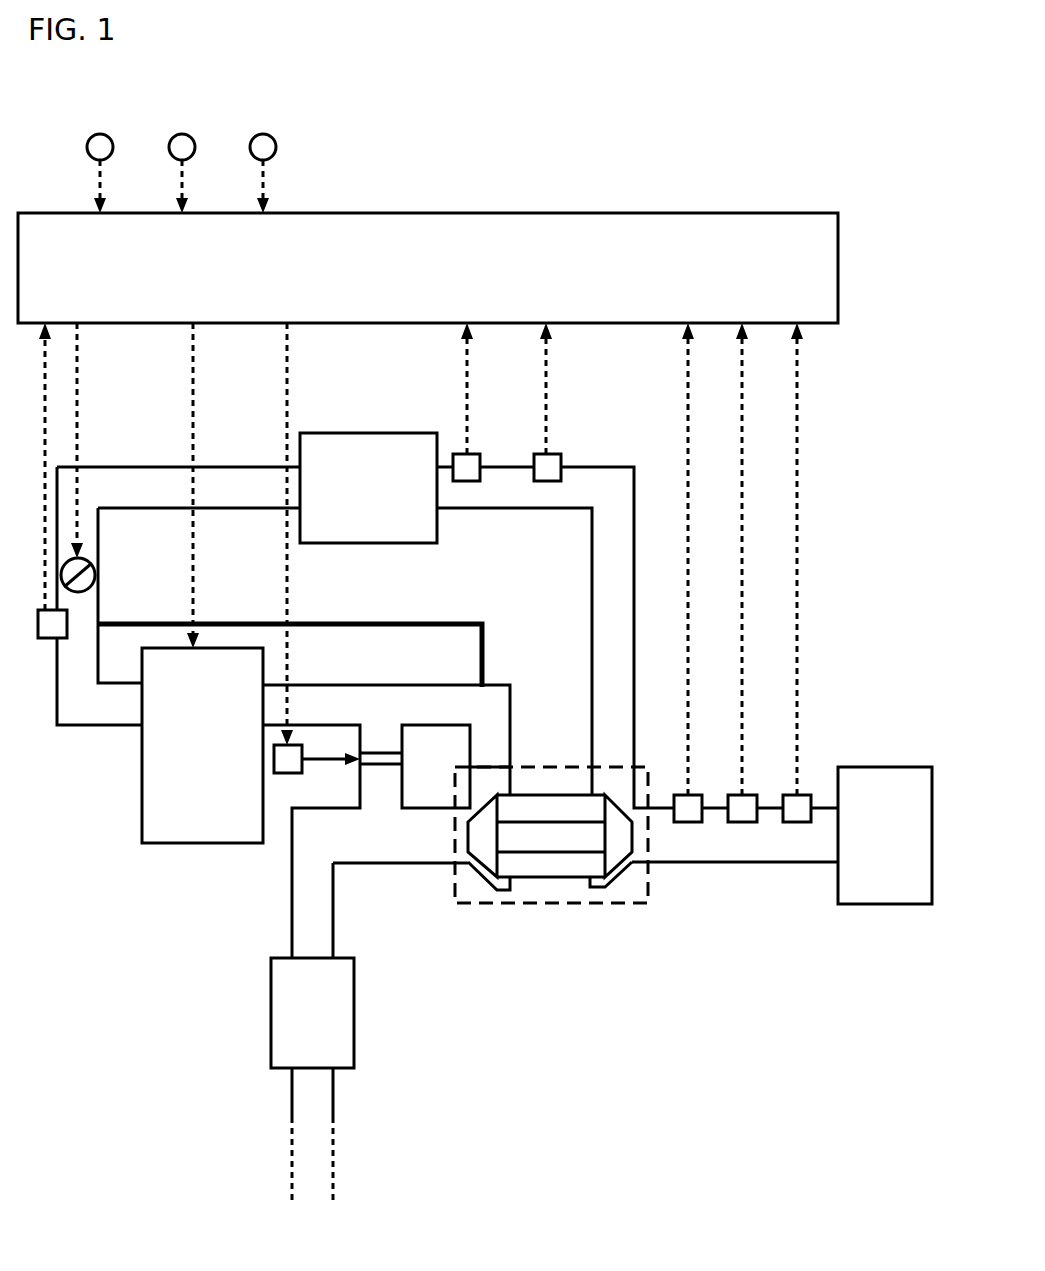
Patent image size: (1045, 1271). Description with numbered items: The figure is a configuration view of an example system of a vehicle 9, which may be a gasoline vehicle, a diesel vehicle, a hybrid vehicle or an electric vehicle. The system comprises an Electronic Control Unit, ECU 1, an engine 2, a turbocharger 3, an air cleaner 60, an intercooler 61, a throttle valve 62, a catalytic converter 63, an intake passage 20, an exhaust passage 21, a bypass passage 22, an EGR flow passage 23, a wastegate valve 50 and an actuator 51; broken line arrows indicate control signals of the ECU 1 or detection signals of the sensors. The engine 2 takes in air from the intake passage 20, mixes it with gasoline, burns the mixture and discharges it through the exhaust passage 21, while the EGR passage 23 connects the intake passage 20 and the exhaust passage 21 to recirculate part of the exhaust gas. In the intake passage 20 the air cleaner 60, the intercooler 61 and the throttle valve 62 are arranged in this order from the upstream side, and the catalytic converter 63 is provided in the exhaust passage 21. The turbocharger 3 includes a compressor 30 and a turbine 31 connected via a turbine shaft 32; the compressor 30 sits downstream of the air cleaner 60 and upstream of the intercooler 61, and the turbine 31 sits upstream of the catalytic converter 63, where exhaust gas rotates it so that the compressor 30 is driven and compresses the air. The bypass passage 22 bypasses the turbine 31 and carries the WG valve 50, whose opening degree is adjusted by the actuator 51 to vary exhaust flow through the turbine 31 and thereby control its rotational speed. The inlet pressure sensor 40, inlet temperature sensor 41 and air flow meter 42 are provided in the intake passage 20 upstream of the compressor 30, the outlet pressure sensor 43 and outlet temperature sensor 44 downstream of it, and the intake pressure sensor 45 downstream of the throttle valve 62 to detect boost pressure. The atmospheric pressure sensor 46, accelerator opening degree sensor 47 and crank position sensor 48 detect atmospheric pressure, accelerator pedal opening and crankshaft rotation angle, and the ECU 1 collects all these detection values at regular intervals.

The Electronic Control Unit (ECU) 1 is at (838, 226).
The engine 2 is at (225, 648).
The turbocharger 3 is at (648, 805).
The vehicle 9 is at (792, 176).
The intake passage 20 is at (634, 612).
The exhaust passage 21 is at (430, 685).
The bypass passage 22 is at (402, 778).
The EGR flow passage 23 is at (482, 623).
The compressor 30 is at (618, 783).
The turbine 31 is at (493, 790).
The turbine shaft 32 is at (533, 818).
The inlet pressure sensor 40 is at (797, 795).
The inlet temperature sensor 41 is at (743, 795).
The air flow meter 42 is at (690, 795).
The outlet pressure sensor 43 is at (547, 454).
The outlet temperature sensor 44 is at (467, 454).
The intake pressure sensor 45 is at (67, 619).
The atmospheric pressure sensor 46 is at (109, 138).
The accelerator opening degree sensor 47 is at (191, 138).
The crank position sensor 48 is at (272, 138).
The wastegate valve 50 is at (383, 753).
The actuator 51 is at (292, 745).
The air cleaner 60 is at (888, 767).
The intercooler 61 is at (370, 433).
The throttle valve 62 is at (90, 561).
The catalytic converter 63 is at (354, 968).